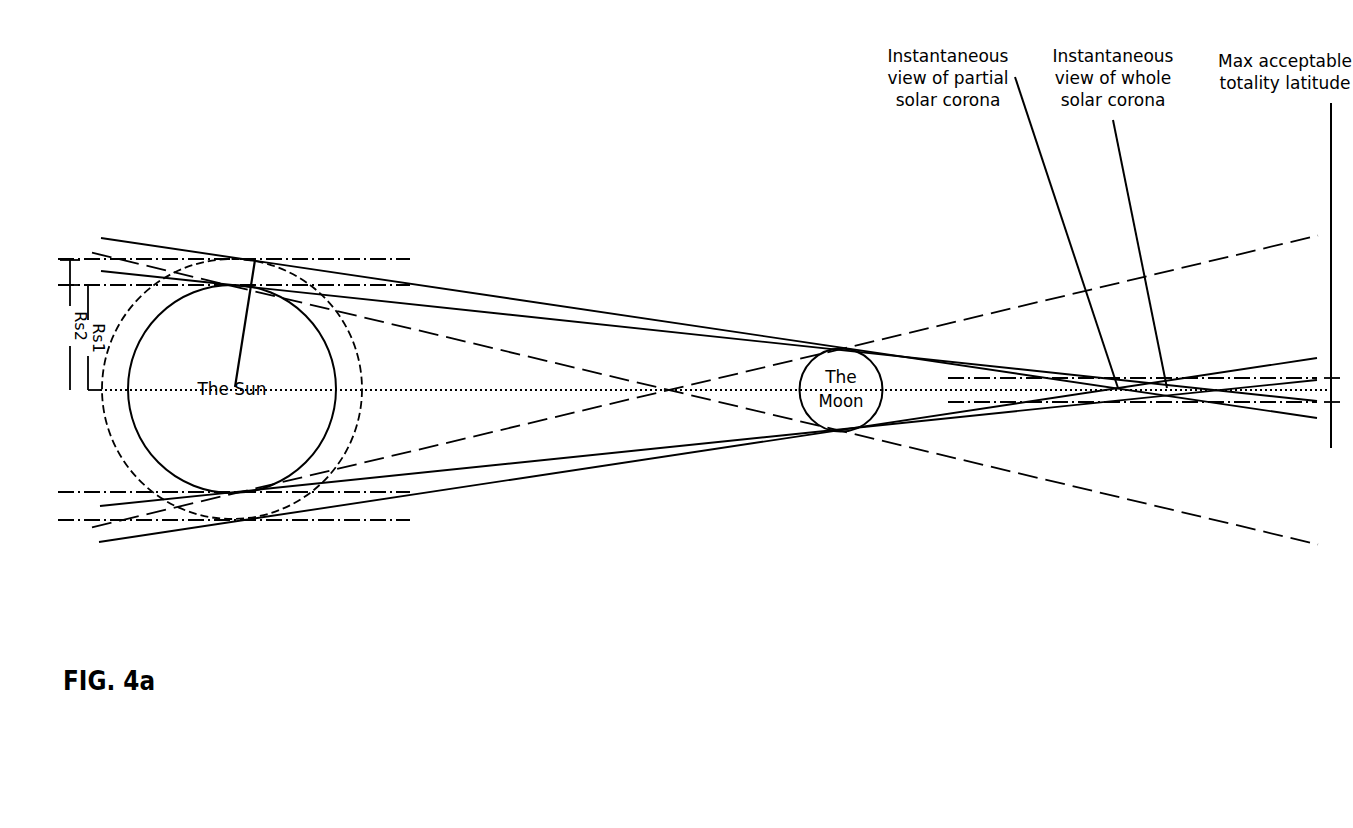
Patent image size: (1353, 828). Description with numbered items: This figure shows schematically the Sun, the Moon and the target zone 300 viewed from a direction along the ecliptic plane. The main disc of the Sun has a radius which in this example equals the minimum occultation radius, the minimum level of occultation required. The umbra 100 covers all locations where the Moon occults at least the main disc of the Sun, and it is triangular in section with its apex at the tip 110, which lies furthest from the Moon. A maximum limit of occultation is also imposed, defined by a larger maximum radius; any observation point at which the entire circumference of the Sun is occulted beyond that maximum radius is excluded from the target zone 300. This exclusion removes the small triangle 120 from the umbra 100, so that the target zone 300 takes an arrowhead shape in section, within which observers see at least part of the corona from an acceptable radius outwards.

The small triangle 120 is at (921, 381).
The target zone 300 is at (1083, 406).
The umbra 100 is at (1130, 402).
The tip 110 is at (1231, 391).